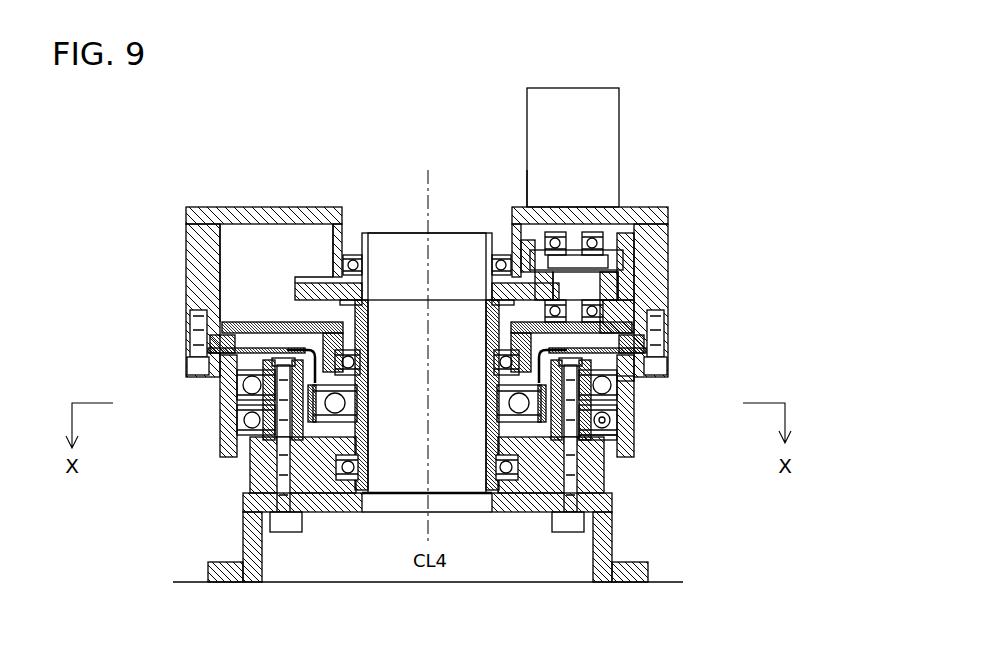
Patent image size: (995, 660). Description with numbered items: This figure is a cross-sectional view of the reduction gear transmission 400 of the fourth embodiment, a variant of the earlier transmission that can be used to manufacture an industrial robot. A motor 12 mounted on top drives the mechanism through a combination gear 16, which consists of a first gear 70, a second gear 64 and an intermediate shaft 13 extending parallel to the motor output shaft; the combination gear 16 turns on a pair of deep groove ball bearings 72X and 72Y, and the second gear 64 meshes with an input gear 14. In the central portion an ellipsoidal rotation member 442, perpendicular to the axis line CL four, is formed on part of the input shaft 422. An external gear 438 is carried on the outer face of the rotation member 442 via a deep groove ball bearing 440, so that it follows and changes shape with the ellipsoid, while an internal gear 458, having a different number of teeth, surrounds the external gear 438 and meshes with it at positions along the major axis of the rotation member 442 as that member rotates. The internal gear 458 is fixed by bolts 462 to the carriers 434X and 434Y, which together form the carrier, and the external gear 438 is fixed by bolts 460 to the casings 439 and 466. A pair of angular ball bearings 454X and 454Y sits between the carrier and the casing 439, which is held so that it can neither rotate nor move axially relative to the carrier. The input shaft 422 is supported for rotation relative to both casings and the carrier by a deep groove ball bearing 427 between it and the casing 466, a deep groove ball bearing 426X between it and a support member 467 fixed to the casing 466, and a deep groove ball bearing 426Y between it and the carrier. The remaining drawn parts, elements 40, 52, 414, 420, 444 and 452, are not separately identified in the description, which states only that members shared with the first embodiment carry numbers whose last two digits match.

The reduction gear transmission 400 is at (733, 131).
The motor 12 is at (619, 118).
The intermediate shaft 13 is at (582, 206).
The input gear 14 is at (527, 206).
The combination gear 16 is at (580, 288).
The pedestal 40 is at (370, 503).
The base 52 is at (612, 533).
The second gear 64 is at (635, 306).
The first gear 70 is at (598, 262).
The deep groove ball bearing 72X is at (620, 233).
The deep groove ball bearing 72Y is at (640, 335).
The flange 414 is at (323, 290).
The rotary shaft 420 is at (375, 290).
The input shaft 422 is at (413, 320).
The deep groove ball bearing 426X is at (186, 228).
The deep groove ball bearing 426Y is at (342, 478).
The deep groove ball bearing 427 is at (353, 258).
The carrier 434X is at (208, 345).
The carrier 434Y is at (240, 400).
The external gear 438 is at (625, 432).
The casing 439 is at (637, 383).
The deep groove ball bearing 440 is at (350, 405).
The rotation member 442 is at (368, 395).
The bolt 444 is at (222, 452).
The fastening bolt 452 is at (270, 522).
The angular ball bearing 454X is at (222, 378).
The angular ball bearing 454Y is at (222, 426).
The internal gear 458 is at (628, 410).
The bolt 460 is at (667, 367).
The bolt 462 is at (186, 307).
The casing 466 is at (605, 278).
The support member 467 is at (330, 320).